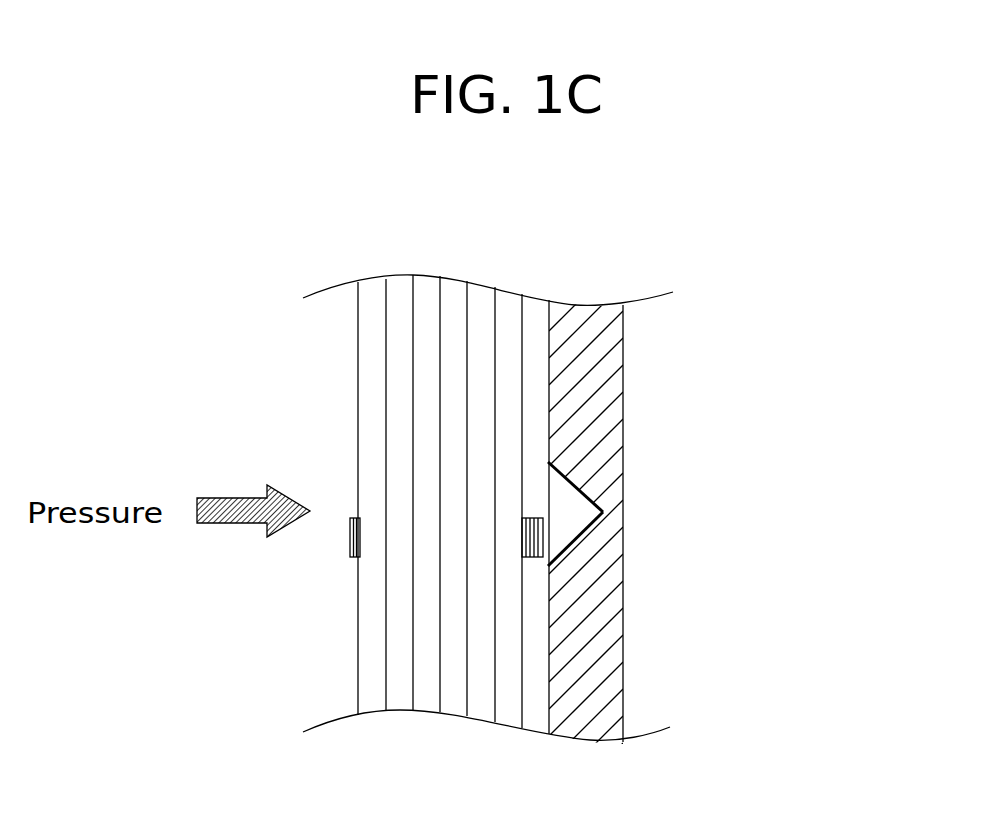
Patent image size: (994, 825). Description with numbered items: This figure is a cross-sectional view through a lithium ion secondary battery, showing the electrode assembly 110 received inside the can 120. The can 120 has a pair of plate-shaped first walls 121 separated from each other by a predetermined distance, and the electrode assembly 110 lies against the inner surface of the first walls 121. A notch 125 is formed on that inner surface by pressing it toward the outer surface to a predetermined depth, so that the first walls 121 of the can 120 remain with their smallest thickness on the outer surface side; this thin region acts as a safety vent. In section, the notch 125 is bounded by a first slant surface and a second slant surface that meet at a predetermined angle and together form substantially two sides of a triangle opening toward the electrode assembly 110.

The electrode assembly 110 is at (350, 618).
The can 120 is at (727, 537).
The first walls 121 is at (725, 537).
The notch 125 is at (735, 514).